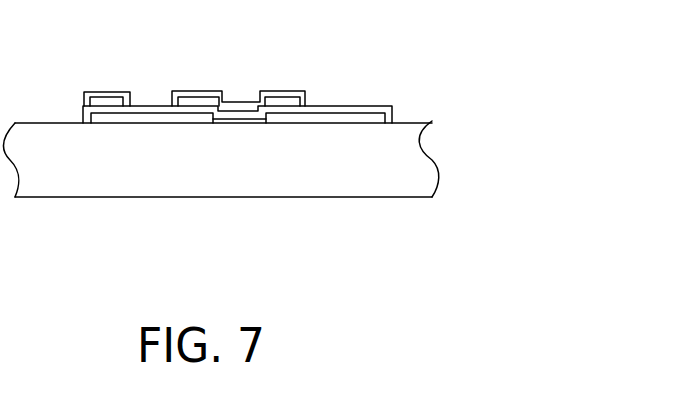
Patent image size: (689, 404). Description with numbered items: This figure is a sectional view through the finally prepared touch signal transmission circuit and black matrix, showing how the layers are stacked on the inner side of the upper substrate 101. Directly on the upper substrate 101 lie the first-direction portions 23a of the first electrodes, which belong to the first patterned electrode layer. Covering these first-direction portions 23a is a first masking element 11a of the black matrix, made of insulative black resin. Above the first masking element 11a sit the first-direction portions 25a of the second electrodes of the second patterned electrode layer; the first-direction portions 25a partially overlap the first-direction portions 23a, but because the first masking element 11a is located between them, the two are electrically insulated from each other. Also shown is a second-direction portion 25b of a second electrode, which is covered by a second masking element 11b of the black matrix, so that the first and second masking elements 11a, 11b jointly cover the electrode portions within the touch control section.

The upper substrate 101 is at (420, 175).
The first-direction portions 23a is at (136, 118).
The first masking elements 11a is at (148, 105).
The first-direction portions 25a is at (239, 102).
The second masking elements 11b is at (92, 91).
The second-direction portions 25b is at (113, 99).